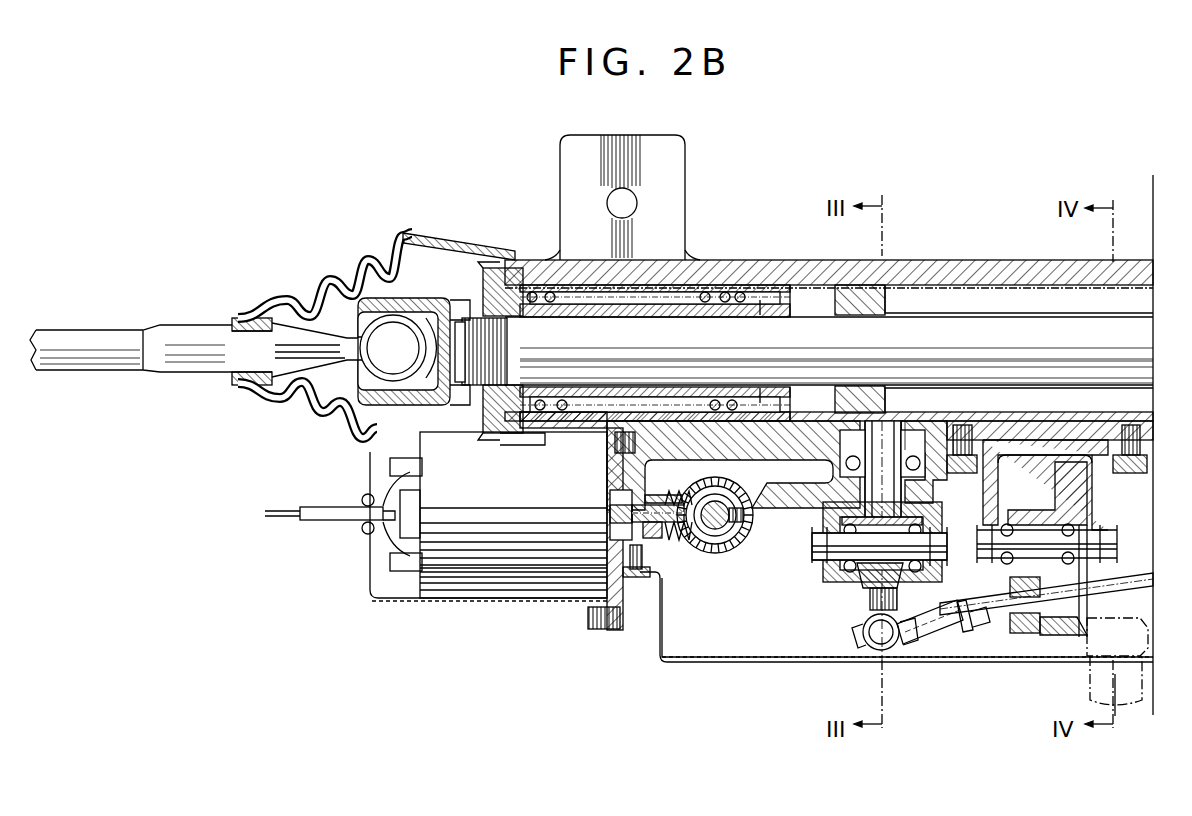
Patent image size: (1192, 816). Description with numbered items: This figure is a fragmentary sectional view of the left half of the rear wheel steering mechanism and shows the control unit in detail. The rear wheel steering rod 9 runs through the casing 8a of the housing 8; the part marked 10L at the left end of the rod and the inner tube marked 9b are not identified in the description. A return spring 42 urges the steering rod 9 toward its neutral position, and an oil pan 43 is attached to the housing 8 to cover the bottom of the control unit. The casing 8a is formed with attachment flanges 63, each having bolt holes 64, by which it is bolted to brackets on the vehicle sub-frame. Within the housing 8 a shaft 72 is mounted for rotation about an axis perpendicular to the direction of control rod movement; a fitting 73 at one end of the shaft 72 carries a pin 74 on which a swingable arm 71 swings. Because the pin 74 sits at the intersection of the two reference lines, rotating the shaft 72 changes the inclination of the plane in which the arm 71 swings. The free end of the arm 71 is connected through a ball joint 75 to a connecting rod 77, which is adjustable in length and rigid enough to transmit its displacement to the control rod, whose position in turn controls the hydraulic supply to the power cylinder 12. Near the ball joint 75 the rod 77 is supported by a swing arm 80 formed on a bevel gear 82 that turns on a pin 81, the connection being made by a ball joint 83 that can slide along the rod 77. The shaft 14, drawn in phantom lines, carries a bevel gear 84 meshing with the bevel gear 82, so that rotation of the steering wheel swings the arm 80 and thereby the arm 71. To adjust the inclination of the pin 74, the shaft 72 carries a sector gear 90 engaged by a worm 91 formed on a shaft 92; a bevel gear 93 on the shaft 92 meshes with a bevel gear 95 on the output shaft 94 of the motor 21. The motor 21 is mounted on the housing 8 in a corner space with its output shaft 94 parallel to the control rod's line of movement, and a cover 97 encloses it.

The left output shaft 10L is at (131, 364).
The return spring 42 is at (541, 286).
The attachment flanges 63 is at (684, 162).
The bolt holes 64 is at (632, 204).
The housing 8 is at (991, 262).
The casing 8a is at (1056, 272).
The inner tube 9b is at (925, 325).
The power cylinder 12 is at (911, 432).
The motor 21 is at (515, 501).
The cover 97 is at (370, 566).
The shaft 92 is at (712, 530).
The output shaft 94 is at (668, 540).
The bevel gear 95 is at (678, 496).
The sector gear 90 is at (748, 520).
The worm 91 is at (729, 536).
The bevel gear 93 is at (740, 498).
The shaft 72 is at (902, 481).
The fitting 73 is at (835, 572).
The pin 74 is at (905, 572).
The swingable arm 71 is at (860, 580).
The ball joint 75 is at (863, 628).
The swing arm 80 is at (1010, 633).
The ball joint 83 is at (1010, 590).
The pin 81 is at (1102, 540).
The connecting rod 77 is at (1136, 576).
The bevel gear 82 is at (1062, 636).
The bevel gear 84 is at (1123, 628).
The shaft 14 is at (1090, 676).
The rear wheel steering rod 9 is at (1158, 609).
The oil pan 43 is at (727, 664).